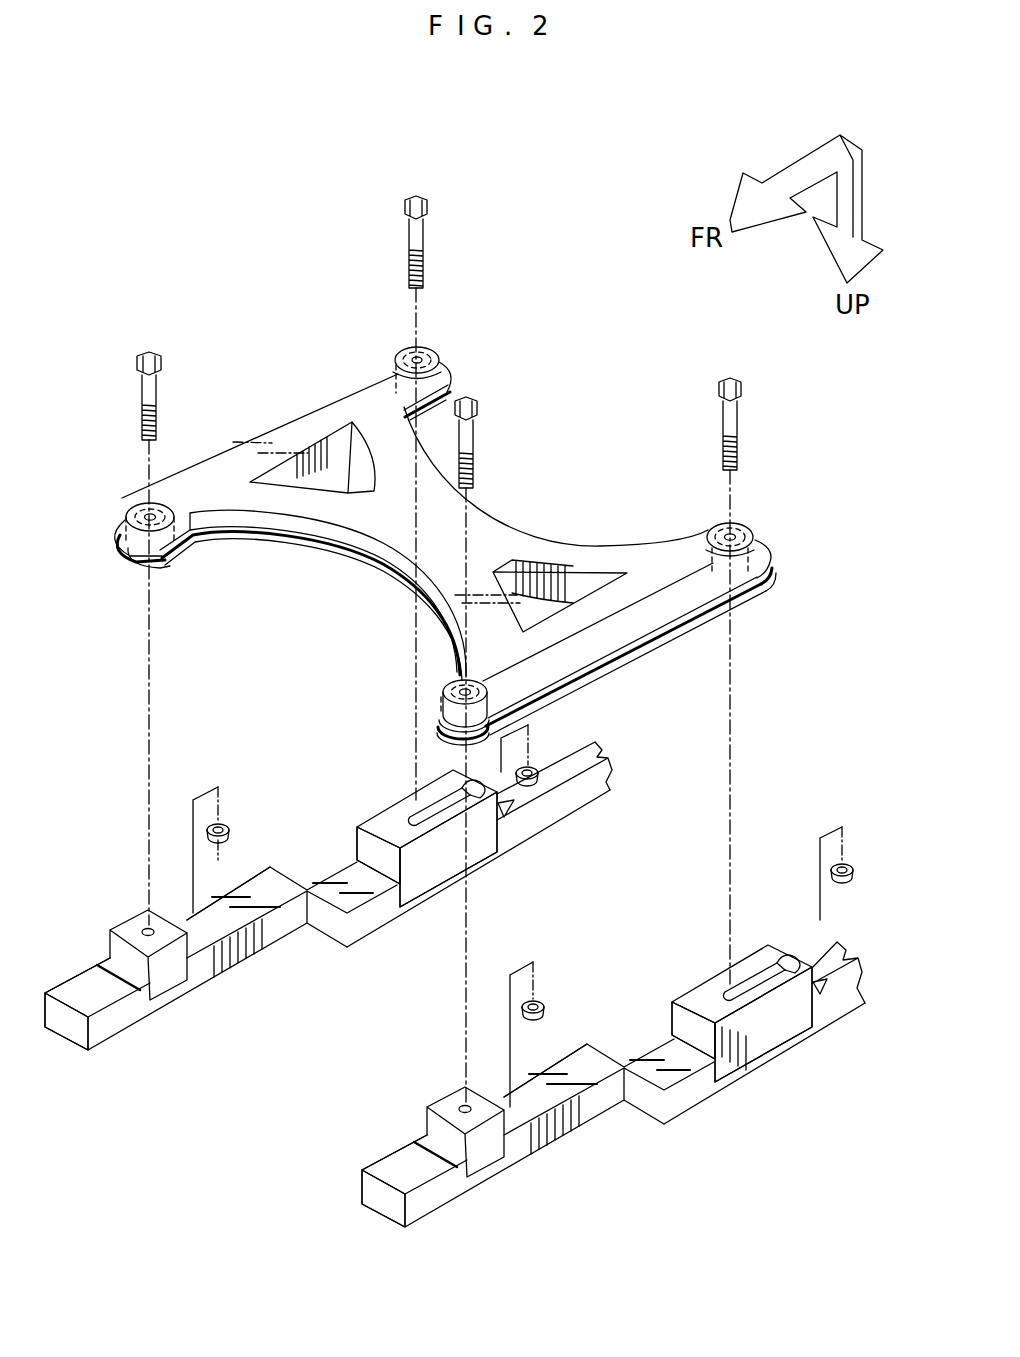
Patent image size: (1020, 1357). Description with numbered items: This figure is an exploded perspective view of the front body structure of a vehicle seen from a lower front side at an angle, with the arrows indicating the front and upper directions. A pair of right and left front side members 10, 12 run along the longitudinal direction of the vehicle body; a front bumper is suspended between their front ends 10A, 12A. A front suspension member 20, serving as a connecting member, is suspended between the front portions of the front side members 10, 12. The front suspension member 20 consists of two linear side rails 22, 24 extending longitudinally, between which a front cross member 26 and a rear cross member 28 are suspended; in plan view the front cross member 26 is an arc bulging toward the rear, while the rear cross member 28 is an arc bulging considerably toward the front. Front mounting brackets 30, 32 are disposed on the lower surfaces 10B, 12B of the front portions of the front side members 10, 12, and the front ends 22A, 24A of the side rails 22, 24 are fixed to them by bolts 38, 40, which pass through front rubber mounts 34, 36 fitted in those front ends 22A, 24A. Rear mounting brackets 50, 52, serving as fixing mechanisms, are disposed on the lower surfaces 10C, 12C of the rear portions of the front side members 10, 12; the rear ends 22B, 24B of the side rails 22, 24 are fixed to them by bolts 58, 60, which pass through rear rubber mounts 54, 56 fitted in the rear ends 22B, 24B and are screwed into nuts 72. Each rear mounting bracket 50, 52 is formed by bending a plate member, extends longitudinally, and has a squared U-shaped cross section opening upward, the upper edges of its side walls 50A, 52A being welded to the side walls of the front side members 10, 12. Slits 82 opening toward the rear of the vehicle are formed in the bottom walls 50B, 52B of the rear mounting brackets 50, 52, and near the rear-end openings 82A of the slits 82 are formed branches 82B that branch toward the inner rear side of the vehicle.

The front side member 10 is at (264, 951).
The front end of front side member 10A is at (68, 1032).
The lower surface of front portion of front side member 10B is at (76, 982).
The lower surface of rear portion of front side member 10C is at (518, 800).
The front side member 12 is at (575, 1127).
The front end of front side member 12A is at (380, 1203).
The lower surface of front portion of front side member 12B is at (430, 1168).
The lower surface of rear portion of front side member 12C is at (838, 977).
The front suspension member 20 is at (331, 332).
The side rail 22 is at (290, 420).
The front end of side rail 22A is at (122, 512).
The rear end of side rail 22B is at (443, 355).
The side rail 24 is at (622, 618).
The front end of side rail 24A is at (440, 690).
The rear end of side rail 24B is at (752, 535).
The front cross member 26 is at (376, 546).
The rear cross member 28 is at (478, 520).
The front mounting bracket 30 is at (128, 912).
The front mounting bracket 32 is at (445, 1095).
The front rubber mount 34 is at (165, 497).
The front rubber mount 36 is at (484, 688).
The bolt 38 is at (143, 388).
The bolt 40 is at (472, 435).
The rear mounting bracket 50 is at (385, 806).
The side wall of rear mounting bracket 50A is at (441, 860).
The bottom wall of rear mounting bracket 50B is at (403, 835).
The rear mounting bracket 52 is at (698, 991).
The side wall of rear mounting bracket 52A is at (778, 1028).
The bottom wall of rear mounting bracket 52B is at (697, 978).
The rear rubber mount 54 is at (385, 355).
The rear rubber mount 56 is at (702, 528).
The bolt 58 is at (422, 230).
The bolt 60 is at (737, 410).
The nut 72 is at (224, 825).
The slit 82 is at (428, 790).
The rear-end opening of slit 82A is at (470, 786).
The branch 82B is at (505, 818).